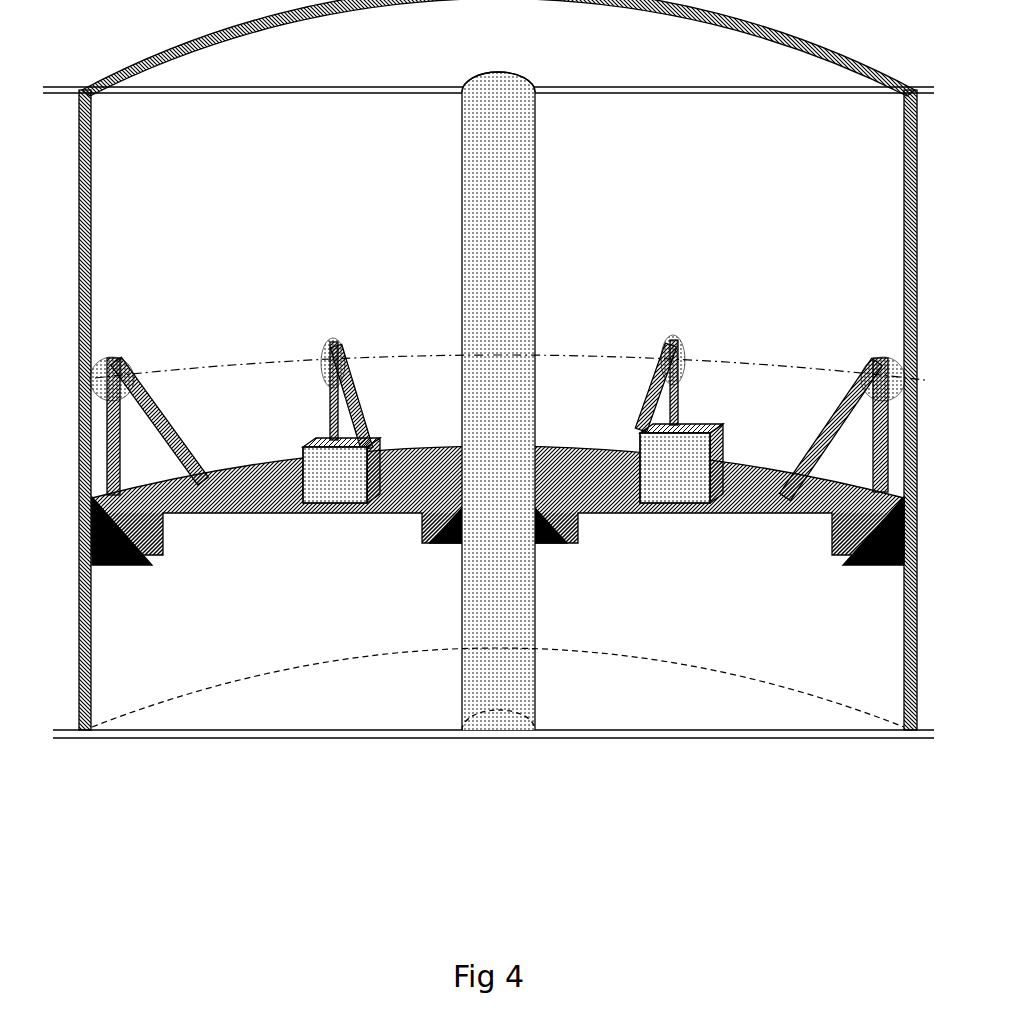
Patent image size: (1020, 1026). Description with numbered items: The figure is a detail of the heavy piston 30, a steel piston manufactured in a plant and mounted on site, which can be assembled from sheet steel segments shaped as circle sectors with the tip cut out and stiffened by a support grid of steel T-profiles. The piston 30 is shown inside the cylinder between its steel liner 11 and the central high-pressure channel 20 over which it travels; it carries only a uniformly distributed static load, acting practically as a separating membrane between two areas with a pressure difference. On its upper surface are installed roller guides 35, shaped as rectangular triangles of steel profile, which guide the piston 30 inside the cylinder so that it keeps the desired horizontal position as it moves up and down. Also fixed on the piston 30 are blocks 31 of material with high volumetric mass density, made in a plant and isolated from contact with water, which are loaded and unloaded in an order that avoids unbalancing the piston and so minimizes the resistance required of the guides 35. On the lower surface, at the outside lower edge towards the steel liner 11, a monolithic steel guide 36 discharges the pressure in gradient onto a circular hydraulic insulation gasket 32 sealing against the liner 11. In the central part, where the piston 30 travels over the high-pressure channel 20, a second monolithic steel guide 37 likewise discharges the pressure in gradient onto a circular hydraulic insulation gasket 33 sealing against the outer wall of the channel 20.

The steel liner 11 is at (91, 280).
The high-pressure channel 20 is at (461, 261).
The heavy piston 30 is at (246, 504).
The blocks of material with high volumetric mass density 31 is at (339, 487).
The circular hydraulic insulation gasket 32 is at (123, 558).
The circular hydraulic insulation gasket 33 is at (449, 536).
The roller guides 35 is at (123, 361).
The monolithic steel guide 36 is at (160, 531).
The monolithic steel guide 37 is at (431, 523).